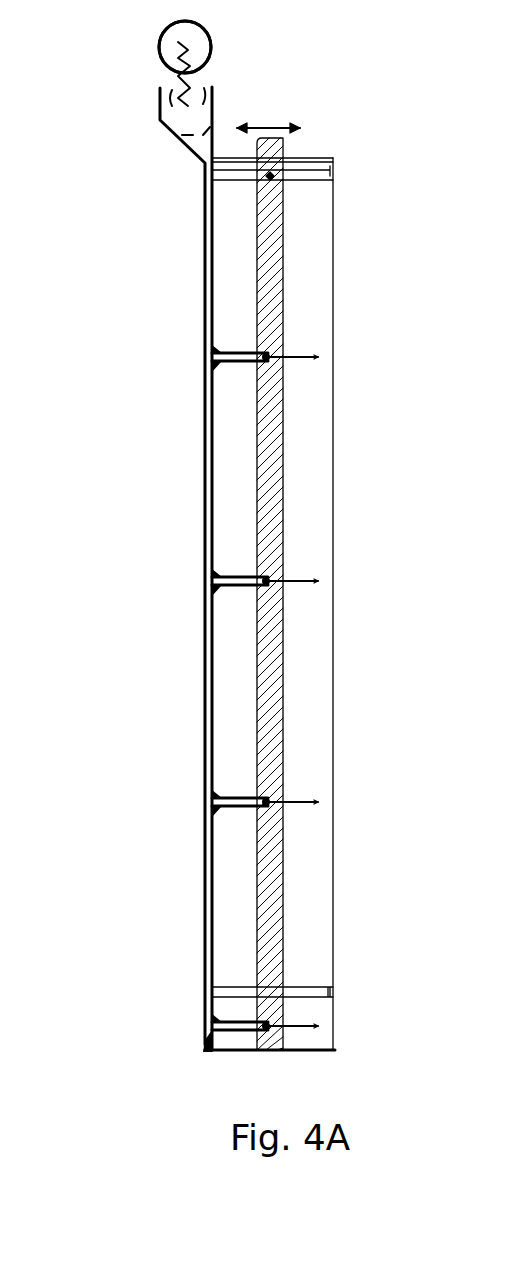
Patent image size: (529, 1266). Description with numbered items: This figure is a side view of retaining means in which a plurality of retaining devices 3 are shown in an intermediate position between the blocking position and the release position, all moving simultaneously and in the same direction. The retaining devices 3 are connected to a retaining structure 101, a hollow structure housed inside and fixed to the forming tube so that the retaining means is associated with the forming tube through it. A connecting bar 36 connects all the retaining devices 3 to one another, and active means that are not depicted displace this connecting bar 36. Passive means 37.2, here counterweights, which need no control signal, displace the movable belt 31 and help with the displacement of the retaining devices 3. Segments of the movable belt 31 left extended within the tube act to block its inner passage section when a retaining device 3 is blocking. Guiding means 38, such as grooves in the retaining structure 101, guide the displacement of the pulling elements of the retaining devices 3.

The retaining device 3 is at (248, 572).
The movable belt 31 is at (200, 202).
The connecting bar 36 is at (268, 426).
The passive means 37.2 is at (195, 43).
The guiding means 38 is at (310, 580).
The retaining structure 101 is at (308, 247).